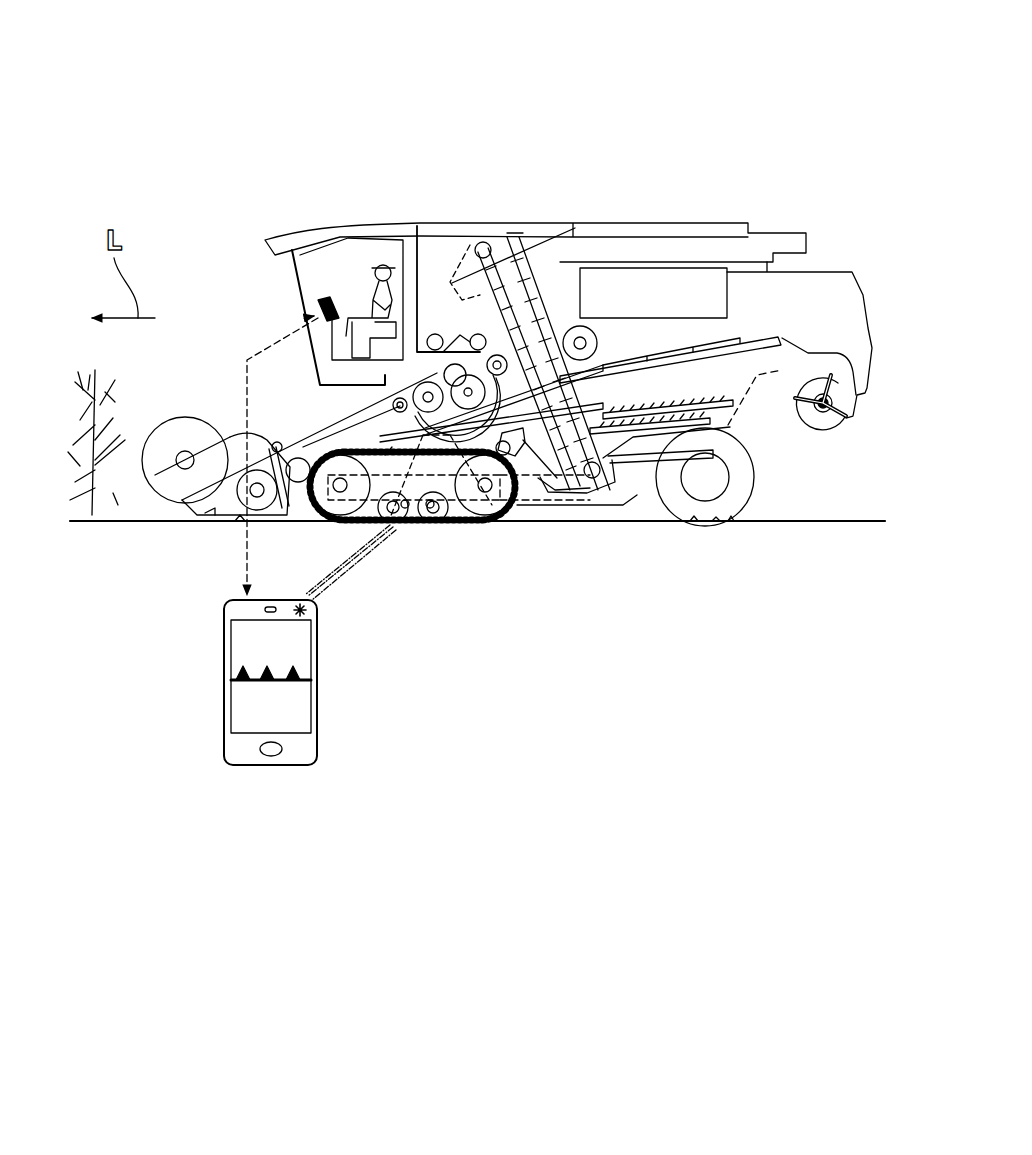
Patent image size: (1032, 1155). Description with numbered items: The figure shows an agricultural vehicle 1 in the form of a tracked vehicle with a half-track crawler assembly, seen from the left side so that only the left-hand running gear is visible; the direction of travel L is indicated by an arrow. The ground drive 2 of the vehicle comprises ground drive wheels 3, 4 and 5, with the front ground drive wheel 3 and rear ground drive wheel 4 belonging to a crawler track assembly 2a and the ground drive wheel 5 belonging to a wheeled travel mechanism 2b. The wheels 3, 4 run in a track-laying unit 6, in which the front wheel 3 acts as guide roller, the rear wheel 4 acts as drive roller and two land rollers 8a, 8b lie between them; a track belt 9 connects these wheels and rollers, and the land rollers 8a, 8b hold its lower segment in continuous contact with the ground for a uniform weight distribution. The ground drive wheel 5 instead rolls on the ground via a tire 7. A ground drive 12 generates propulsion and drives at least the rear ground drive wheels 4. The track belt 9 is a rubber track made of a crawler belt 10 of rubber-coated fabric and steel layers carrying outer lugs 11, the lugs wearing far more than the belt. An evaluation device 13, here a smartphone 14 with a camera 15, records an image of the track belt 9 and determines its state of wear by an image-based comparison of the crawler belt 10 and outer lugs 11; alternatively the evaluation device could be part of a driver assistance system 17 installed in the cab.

The agricultural vehicle 1 is at (203, 111).
The ground drive 2 is at (756, 305).
The crawler track assembly 2a is at (453, 540).
The wheeled travel mechanism 2b is at (728, 541).
The front ground drive wheel 3 is at (297, 527).
The rear ground drive wheel 4 is at (520, 528).
The ground drive wheel 5 is at (693, 487).
The track-laying unit 6 is at (404, 537).
The tire 7 is at (693, 522).
The land roller 8a is at (393, 530).
The land roller 8b is at (443, 530).
The track belt 9 is at (387, 450).
The crawler belt 10 is at (257, 683).
The outer lugs 11 is at (291, 667).
The ground drive 12 is at (670, 288).
The evaluation device 13 is at (243, 753).
The smartphone 14 is at (270, 726).
The camera 15 is at (317, 648).
The driver assistance system 17 is at (328, 304).